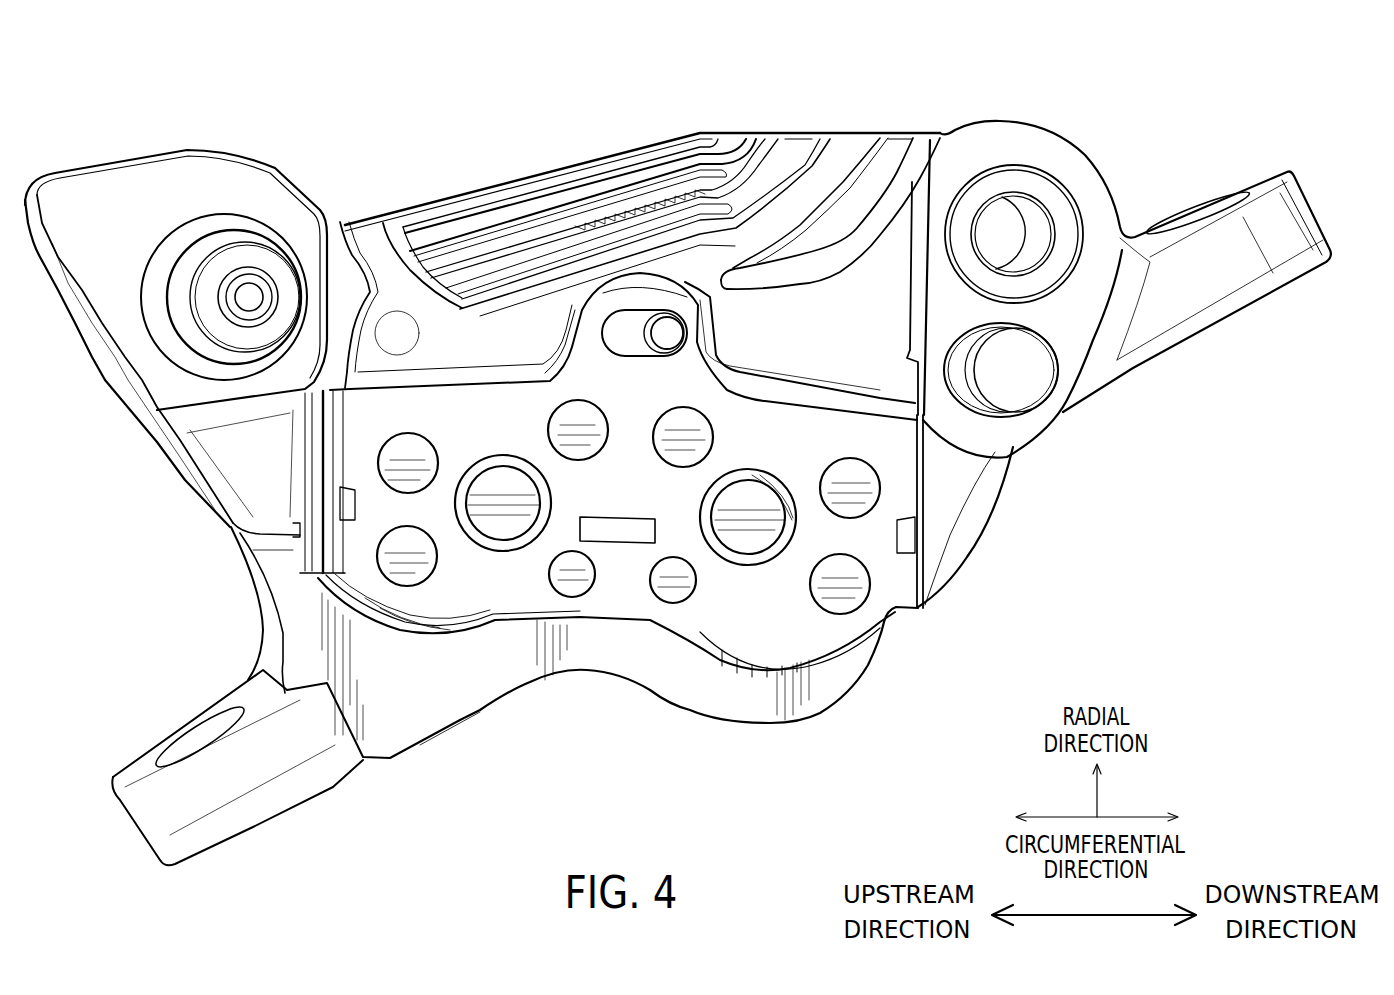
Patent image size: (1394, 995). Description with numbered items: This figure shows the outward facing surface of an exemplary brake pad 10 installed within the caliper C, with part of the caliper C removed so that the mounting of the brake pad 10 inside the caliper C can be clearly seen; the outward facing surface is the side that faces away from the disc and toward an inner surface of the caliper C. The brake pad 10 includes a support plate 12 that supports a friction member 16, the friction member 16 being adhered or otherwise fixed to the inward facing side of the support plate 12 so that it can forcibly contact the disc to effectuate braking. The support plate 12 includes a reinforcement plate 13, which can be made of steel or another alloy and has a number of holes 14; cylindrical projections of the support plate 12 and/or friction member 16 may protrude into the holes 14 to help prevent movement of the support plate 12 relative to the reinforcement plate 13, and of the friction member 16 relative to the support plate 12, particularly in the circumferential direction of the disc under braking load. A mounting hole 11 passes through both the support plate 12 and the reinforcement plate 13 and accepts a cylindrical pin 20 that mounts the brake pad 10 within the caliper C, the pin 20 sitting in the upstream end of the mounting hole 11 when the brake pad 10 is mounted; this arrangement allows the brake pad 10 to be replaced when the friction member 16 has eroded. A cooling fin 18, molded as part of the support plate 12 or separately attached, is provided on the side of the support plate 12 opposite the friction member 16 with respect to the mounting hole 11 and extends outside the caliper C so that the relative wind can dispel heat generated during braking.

The brake pad 10 is at (924, 121).
The mounting hole 11 is at (600, 323).
The support plate 12 is at (732, 144).
The reinforcement plate 13 is at (902, 490).
The holes 14 is at (811, 598).
The friction member 16 is at (745, 545).
The cooling fin 18 is at (500, 210).
The pin 20 is at (631, 355).
The caliper C is at (468, 697).